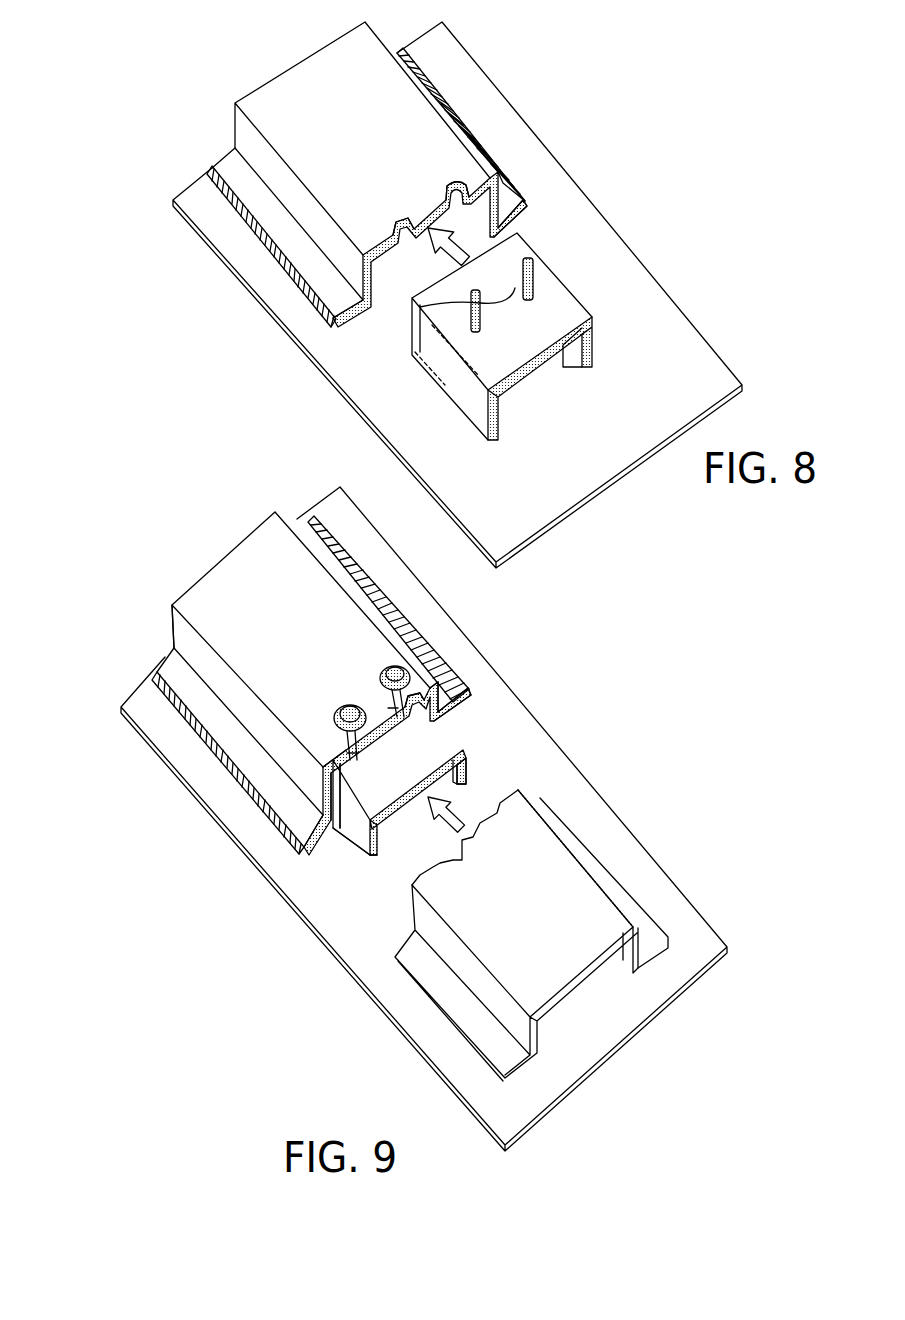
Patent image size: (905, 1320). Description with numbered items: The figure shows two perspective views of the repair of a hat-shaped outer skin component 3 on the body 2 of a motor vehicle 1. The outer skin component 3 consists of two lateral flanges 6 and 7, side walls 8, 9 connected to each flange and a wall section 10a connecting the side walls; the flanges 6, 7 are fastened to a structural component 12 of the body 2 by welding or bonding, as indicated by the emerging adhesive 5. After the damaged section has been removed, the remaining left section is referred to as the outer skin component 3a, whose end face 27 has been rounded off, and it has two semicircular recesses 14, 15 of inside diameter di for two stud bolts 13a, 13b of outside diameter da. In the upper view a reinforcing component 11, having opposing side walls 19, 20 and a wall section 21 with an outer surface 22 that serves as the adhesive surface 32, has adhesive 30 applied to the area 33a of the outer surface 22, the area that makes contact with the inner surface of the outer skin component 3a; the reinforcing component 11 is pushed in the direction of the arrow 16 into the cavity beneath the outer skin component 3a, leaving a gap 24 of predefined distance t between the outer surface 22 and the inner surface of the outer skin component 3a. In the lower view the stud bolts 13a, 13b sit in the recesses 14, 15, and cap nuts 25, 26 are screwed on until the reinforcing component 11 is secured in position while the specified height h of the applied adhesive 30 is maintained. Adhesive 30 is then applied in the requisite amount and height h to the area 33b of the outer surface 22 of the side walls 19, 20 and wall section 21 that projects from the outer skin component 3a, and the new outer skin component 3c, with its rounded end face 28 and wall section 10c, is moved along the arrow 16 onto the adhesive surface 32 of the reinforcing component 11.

In FIG. 8, the motor vehicle 1 is at (457, 295).
In FIG. 9, the motor vehicle 1 is at (424, 819).
In FIG. 8, the body 2 is at (457, 295).
In FIG. 9, the body 2 is at (424, 819).
In FIG. 8, the structural component 12 is at (470, 80).
In FIG. 9, the structural component 12 is at (587, 807).
In FIG. 8, the outer skin component 3 is at (373, 173).
In FIG. 9, the outer skin component 3 is at (321, 679).
In FIG. 8, the outer skin component 3a is at (373, 173).
In FIG. 9, the outer skin component 3a is at (321, 679).
In FIG. 9, the new outer skin component 3c is at (567, 935).
In FIG. 8, the wall section 10a is at (287, 88).
In FIG. 9, the wall section 10a is at (300, 608).
In FIG. 9, the wall section 10c is at (557, 890).
In FIG. 8, the emerging adhesive 5 is at (260, 238).
In FIG. 9, the emerging adhesive 5 is at (310, 524).
In FIG. 8, the lateral flange 6 is at (230, 150).
In FIG. 9, the lateral flange 6 is at (167, 660).
In FIG. 8, the lateral flange 7 is at (503, 200).
In FIG. 9, the lateral flange 7 is at (302, 533).
In FIG. 9, the side wall 8 is at (172, 625).
In FIG. 9, the side wall 9 is at (447, 690).
In FIG. 9, the reinforcing component 11 is at (393, 844).
In FIG. 8, the stud bolt 13a is at (438, 373).
In FIG. 9, the stud bolt 13a is at (347, 753).
In FIG. 8, the stud bolt 13b is at (530, 265).
In FIG. 9, the stud bolt 13b is at (387, 708).
In FIG. 8, the outside diameter da is at (478, 337).
In FIG. 8, the semicircular recess 14 is at (372, 204).
In FIG. 9, the semicircular recess 14 is at (240, 803).
In FIG. 8, the semicircular recess 15 is at (447, 193).
In FIG. 9, the semicircular recess 15 is at (420, 693).
In FIG. 8, the inside diameter di is at (392, 221).
In FIG. 9, the inside diameter di is at (323, 747).
In FIG. 8, the arrow 16 is at (320, 357).
In FIG. 9, the arrow 16 is at (432, 822).
In FIG. 9, the side wall 19 is at (373, 853).
In FIG. 9, the side wall 20 is at (467, 762).
In FIG. 9, the wall section 21 is at (554, 761).
In FIG. 8, the outer surface 22 is at (435, 328).
In FIG. 9, the outer surface 22 is at (554, 761).
In FIG. 9, the gap 24 is at (247, 851).
In FIG. 9, the cap nut 25 is at (338, 721).
In FIG. 9, the cap nut 26 is at (381, 672).
In FIG. 9, the end face 27 is at (335, 780).
In FIG. 9, the end face 28 is at (510, 787).
In FIG. 8, the adhesive 30 is at (435, 328).
In FIG. 9, the adhesive 30 is at (554, 761).
In FIG. 8, the adhesive surface 32 is at (435, 328).
In FIG. 9, the adhesive surface 32 is at (554, 761).
In FIG. 8, the area 33a is at (435, 328).
In FIG. 8, the area 33b is at (413, 300).
In FIG. 9, the area 33b is at (554, 761).
In FIG. 9, the distance t is at (370, 840).
In FIG. 9, the height h is at (437, 728).